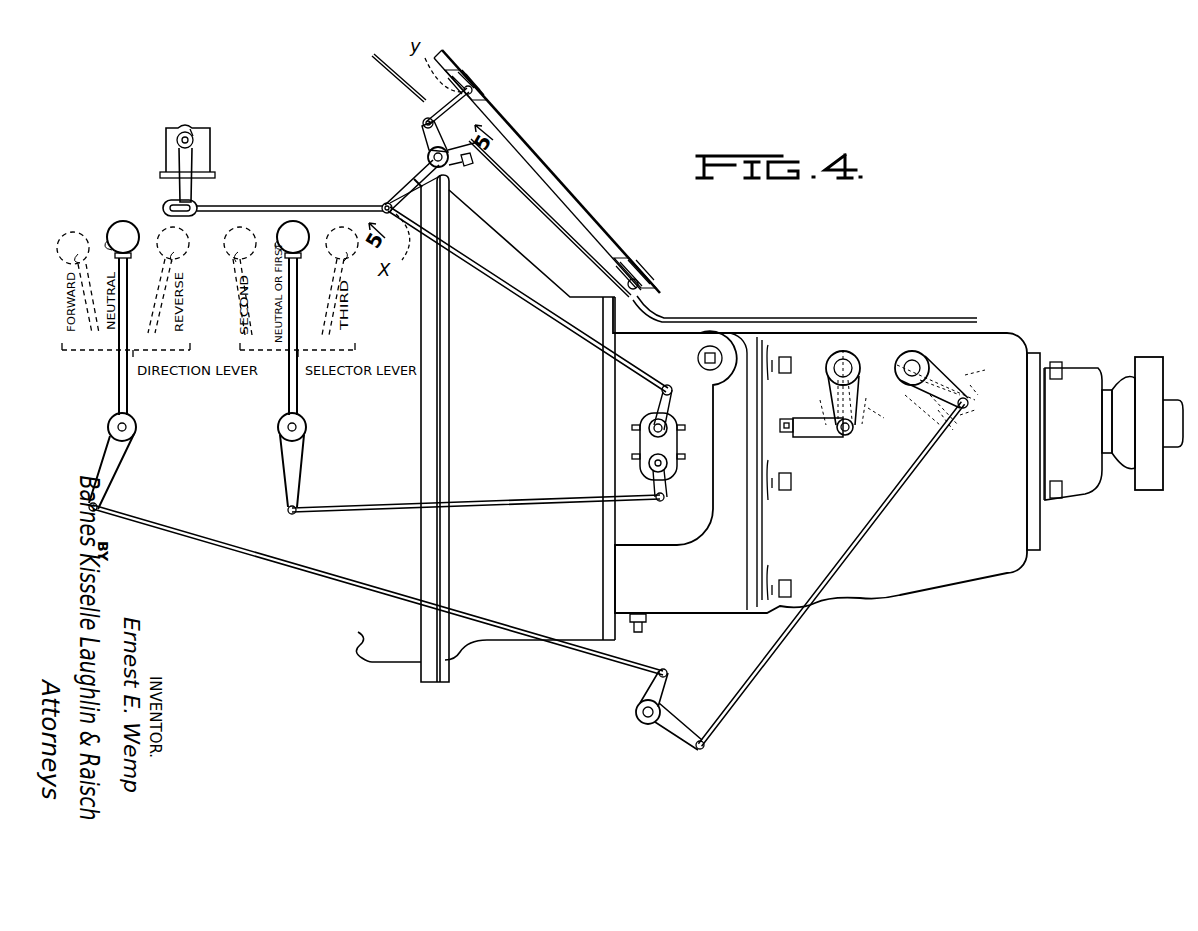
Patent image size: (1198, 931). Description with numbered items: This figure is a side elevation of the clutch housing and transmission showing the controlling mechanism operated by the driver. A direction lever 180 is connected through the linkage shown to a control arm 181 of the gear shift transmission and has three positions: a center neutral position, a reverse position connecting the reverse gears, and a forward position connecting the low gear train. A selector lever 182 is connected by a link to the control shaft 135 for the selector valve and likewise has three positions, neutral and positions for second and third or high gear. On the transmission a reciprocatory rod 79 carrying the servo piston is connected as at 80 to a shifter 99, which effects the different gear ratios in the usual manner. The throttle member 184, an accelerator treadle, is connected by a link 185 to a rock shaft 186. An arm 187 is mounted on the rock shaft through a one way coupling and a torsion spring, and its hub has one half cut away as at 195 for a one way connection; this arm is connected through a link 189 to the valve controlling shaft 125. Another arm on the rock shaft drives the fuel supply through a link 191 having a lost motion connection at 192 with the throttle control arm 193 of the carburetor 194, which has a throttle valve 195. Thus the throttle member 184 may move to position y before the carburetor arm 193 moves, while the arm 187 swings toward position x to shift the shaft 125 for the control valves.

The reciprocatory rod 79 is at (818, 434).
The connection of rod to shifter 80 is at (848, 438).
The shifter 99 is at (834, 388).
The valve controlling shaft 125 is at (670, 406).
The control shaft for selector valve 135 is at (664, 492).
The direction lever 180 is at (128, 404).
The control arm 181 is at (941, 373).
The selector lever 182 is at (298, 454).
The throttle member 184 is at (553, 176).
The link 185 is at (424, 125).
The rock shaft 186 is at (427, 157).
The arm 187 is at (406, 190).
The link 189 is at (541, 312).
The link 191 is at (322, 192).
The lost motion connection 192 is at (164, 204).
The throttle control arm 193 is at (200, 188).
The carburetor 194 is at (205, 143).
The throttle valve 195 is at (195, 130).